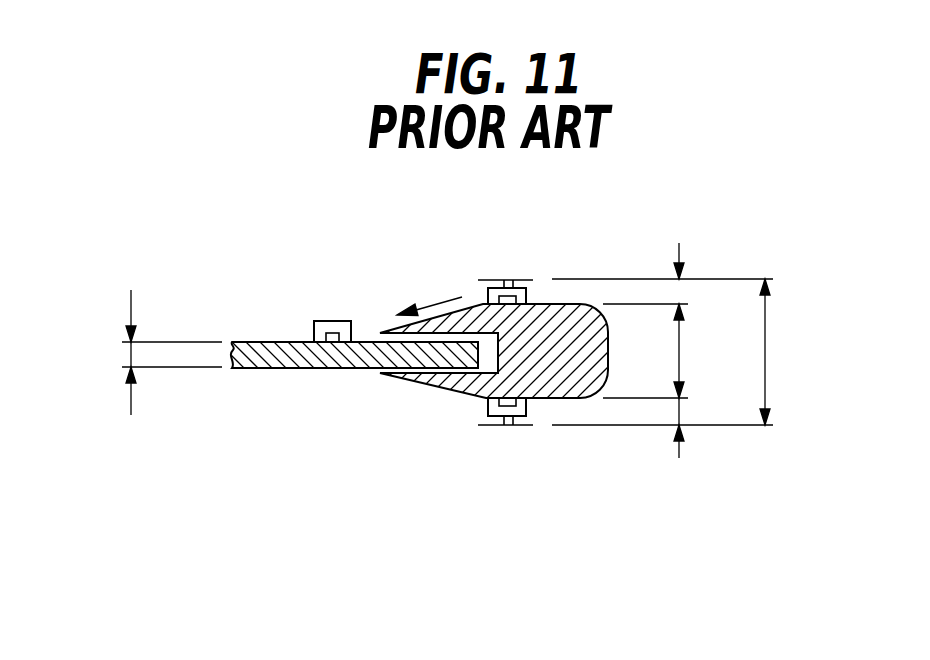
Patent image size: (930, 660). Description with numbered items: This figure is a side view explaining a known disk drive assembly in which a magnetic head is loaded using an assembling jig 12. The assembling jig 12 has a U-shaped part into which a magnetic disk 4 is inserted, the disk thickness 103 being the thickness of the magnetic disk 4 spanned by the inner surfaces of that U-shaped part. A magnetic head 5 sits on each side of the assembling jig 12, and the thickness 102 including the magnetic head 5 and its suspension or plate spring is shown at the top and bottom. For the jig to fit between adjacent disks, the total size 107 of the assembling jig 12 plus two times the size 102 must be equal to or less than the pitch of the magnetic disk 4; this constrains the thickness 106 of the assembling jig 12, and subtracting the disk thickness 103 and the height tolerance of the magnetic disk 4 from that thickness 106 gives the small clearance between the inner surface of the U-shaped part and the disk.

The magnetic disk 4 is at (287, 366).
The magnetic head 5 is at (518, 291).
The assembling jig 12 is at (419, 378).
The thickness including the magnetic head and the suspension 102 is at (679, 292).
The disk thickness 103 is at (130, 352).
The thickness of the assembling jig 106 is at (680, 356).
The total size of the assembling jig 107 is at (766, 355).